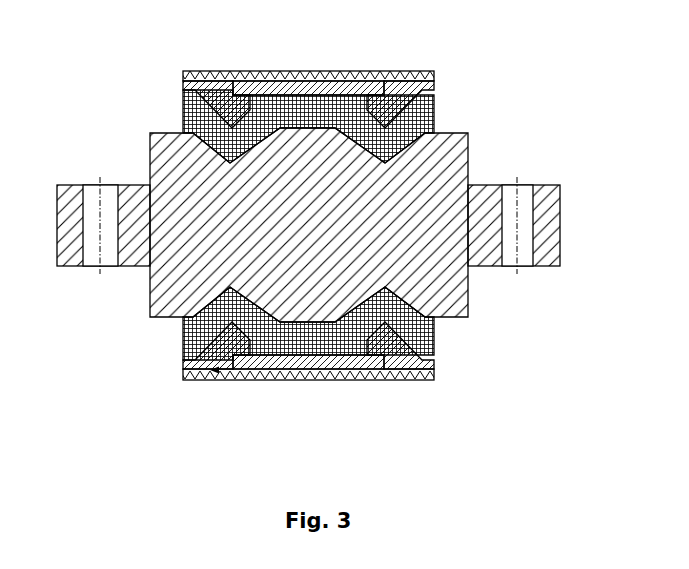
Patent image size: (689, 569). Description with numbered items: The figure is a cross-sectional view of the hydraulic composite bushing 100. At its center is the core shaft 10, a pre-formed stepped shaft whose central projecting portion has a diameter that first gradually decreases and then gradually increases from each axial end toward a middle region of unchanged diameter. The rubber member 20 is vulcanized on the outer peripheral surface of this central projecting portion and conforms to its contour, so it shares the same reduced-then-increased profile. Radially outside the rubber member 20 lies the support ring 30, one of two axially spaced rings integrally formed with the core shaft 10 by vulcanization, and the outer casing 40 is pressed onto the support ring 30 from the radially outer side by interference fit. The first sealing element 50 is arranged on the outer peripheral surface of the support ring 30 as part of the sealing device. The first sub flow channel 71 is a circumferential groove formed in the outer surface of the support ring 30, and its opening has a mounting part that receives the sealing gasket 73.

The hydraulic composite bushing 100 is at (308, 226).
The core shaft 10 is at (430, 267).
The rubber member 20 is at (436, 94).
The support ring 30 is at (217, 74).
The outer casing 40 is at (367, 76).
The first sealing element 50 is at (291, 77).
The first sub flow channel 71 is at (213, 381).
The sealing gasket 73 is at (222, 378).